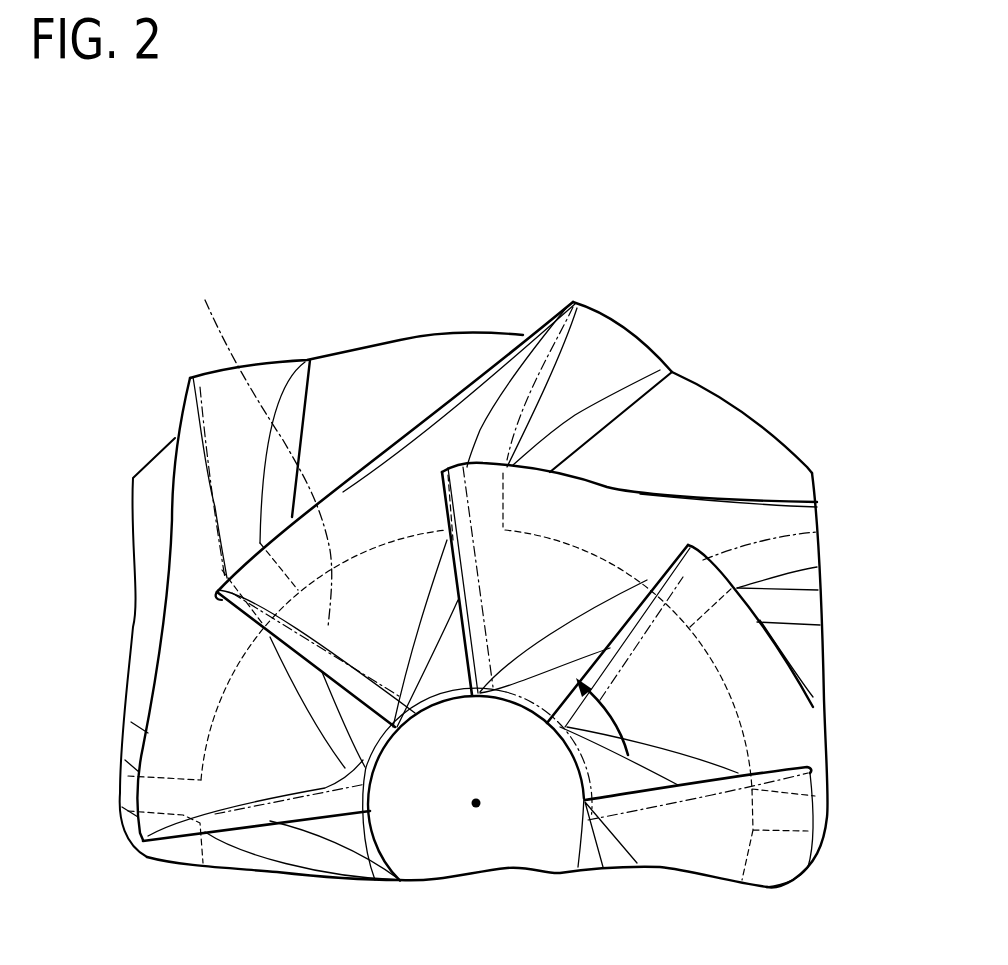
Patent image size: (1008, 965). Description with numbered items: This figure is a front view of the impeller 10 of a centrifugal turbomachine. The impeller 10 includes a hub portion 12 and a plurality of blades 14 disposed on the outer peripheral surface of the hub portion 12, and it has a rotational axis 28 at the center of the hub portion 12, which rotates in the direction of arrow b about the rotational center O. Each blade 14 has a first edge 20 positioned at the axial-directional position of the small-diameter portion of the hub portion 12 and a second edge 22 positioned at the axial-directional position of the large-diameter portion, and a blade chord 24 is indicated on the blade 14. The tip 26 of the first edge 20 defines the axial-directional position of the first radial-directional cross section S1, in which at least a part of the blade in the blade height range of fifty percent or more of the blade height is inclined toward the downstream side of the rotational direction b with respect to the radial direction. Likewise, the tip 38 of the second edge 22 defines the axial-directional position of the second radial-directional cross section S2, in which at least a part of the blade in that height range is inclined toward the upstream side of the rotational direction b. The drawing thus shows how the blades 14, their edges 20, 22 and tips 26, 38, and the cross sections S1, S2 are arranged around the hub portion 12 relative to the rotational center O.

The impeller 10 is at (428, 172).
The hub portion 12 is at (473, 326).
The blade 14 is at (660, 336).
The first edge 20 is at (228, 826).
The second edge 22 is at (610, 316).
The blade chord 24 is at (420, 410).
The tip 26 is at (214, 596).
The rotational axis 28 is at (400, 837).
The tip 38 is at (575, 302).
The first radial-directional cross section S1 is at (262, 447).
The second radial-directional cross section S2 is at (747, 543).
The rotational direction b is at (610, 712).
The rotational center O is at (477, 810).